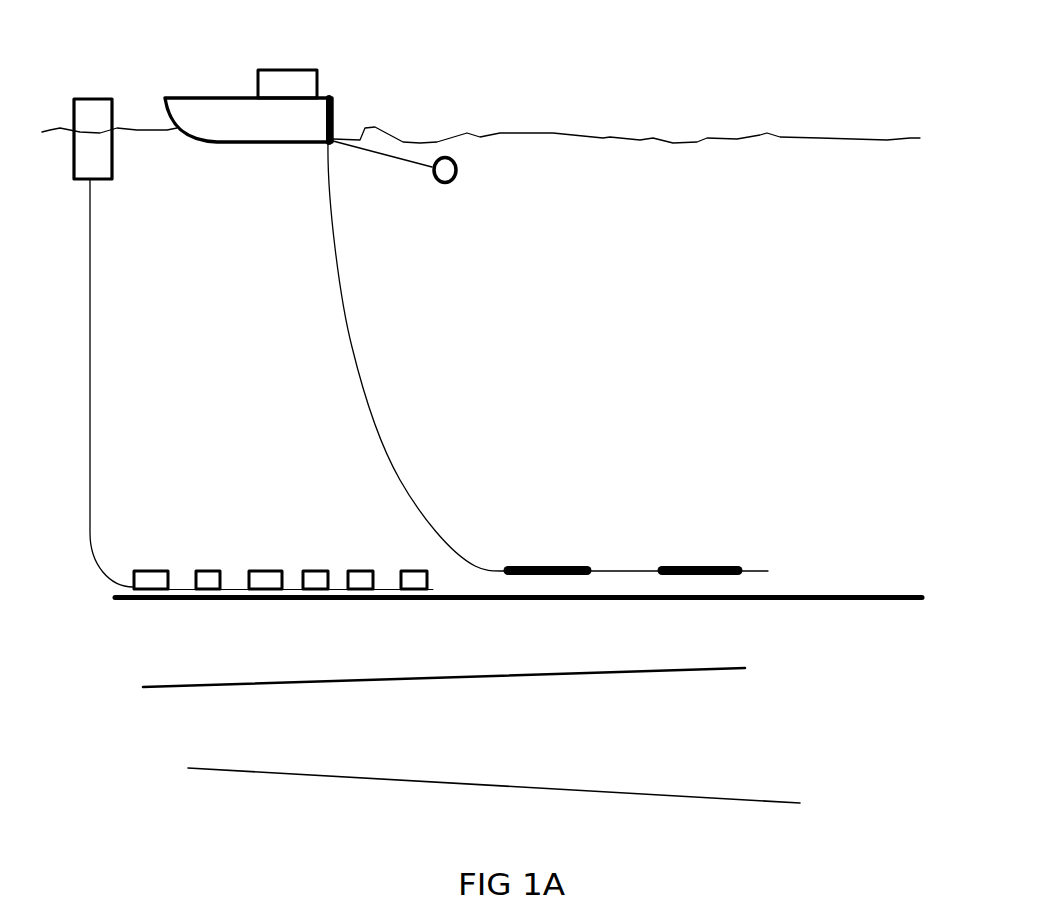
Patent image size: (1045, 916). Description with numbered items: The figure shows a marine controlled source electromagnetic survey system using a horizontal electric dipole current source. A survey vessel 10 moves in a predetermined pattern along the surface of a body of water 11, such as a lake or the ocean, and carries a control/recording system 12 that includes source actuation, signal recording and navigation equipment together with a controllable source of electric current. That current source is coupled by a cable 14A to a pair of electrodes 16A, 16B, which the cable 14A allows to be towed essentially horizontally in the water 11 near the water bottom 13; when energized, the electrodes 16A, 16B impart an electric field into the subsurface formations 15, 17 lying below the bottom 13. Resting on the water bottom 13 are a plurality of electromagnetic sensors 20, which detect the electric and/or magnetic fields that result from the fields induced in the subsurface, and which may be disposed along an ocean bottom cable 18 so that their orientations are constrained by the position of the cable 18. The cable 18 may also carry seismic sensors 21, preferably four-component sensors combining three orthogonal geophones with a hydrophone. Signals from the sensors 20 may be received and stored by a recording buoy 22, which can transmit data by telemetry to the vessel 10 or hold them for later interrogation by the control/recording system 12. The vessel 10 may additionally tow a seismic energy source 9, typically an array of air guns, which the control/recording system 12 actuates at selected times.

The seismic energy source 9 is at (449, 183).
The survey vessel 10 is at (203, 107).
The body of water 11 is at (580, 135).
The control/recording system 12 is at (297, 75).
The water bottom 13 is at (763, 595).
The cable 14A is at (352, 347).
The subsurface formation 15 is at (448, 678).
The electrode 16A is at (535, 565).
The electrode 16B is at (687, 565).
The subsurface formation 17 is at (602, 792).
The cable 18 is at (91, 367).
The electromagnetic sensors 20 is at (162, 570).
The seismic sensors 21 is at (405, 570).
The recording buoy 22 is at (90, 97).